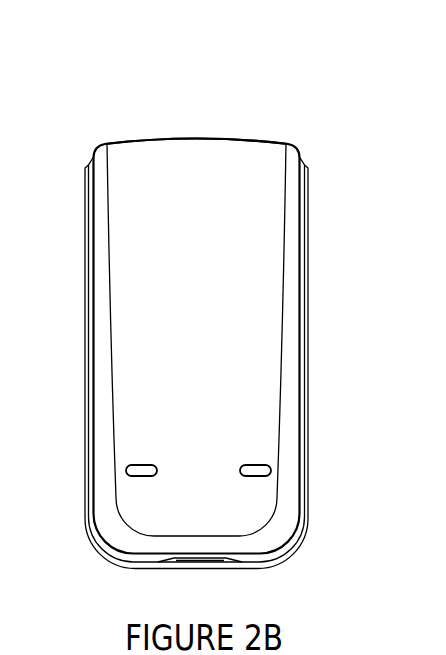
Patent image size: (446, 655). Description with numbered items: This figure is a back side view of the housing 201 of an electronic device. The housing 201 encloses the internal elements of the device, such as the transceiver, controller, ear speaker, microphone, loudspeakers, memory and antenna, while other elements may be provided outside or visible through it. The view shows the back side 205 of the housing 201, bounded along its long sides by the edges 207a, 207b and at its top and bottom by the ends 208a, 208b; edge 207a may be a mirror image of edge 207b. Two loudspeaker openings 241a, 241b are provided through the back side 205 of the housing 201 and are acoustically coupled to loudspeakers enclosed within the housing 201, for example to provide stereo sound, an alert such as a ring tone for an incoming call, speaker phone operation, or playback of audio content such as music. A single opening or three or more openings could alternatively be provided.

The housing 201 is at (218, 110).
The back side 205 is at (150, 157).
The edge 207a is at (310, 350).
The edge 207b is at (88, 377).
The end 208a is at (222, 568).
The end 208b is at (242, 138).
The loudspeaker opening 241a is at (262, 464).
The loudspeaker opening 241b is at (137, 464).